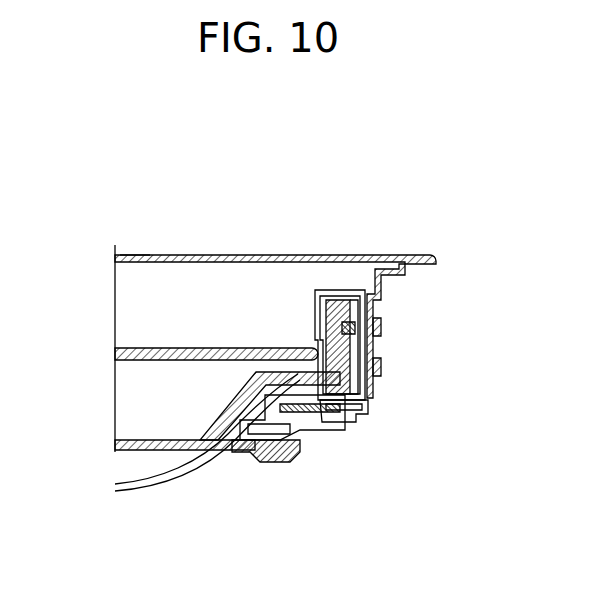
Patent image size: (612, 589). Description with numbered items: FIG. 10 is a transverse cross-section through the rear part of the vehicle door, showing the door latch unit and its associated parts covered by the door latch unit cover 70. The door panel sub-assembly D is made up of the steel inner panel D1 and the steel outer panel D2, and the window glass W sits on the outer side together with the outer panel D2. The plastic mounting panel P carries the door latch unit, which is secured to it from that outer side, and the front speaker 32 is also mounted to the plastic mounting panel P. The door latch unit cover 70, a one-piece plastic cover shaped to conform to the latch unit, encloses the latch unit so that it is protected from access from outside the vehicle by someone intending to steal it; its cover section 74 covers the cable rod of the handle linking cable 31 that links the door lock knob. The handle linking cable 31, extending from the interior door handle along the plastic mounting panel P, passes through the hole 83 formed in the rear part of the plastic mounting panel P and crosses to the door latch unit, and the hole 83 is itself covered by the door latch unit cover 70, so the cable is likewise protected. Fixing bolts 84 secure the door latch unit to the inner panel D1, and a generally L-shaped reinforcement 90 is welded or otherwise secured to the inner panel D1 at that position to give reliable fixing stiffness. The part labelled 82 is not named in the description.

The door panel sub-assembly D is at (202, 256).
The inner panel D1 is at (382, 290).
The outer panel D2 is at (157, 256).
The window glass W is at (167, 350).
The plastic mounting panel P is at (140, 442).
The handle linking cable 31 is at (160, 478).
The front speaker 32 is at (336, 294).
The door latch unit cover 70 is at (315, 312).
The cover section 74 is at (207, 413).
The housing 82 is at (296, 425).
The hole 83 is at (216, 450).
The fixing bolts 84 is at (381, 368).
The reinforcement 90 is at (365, 402).